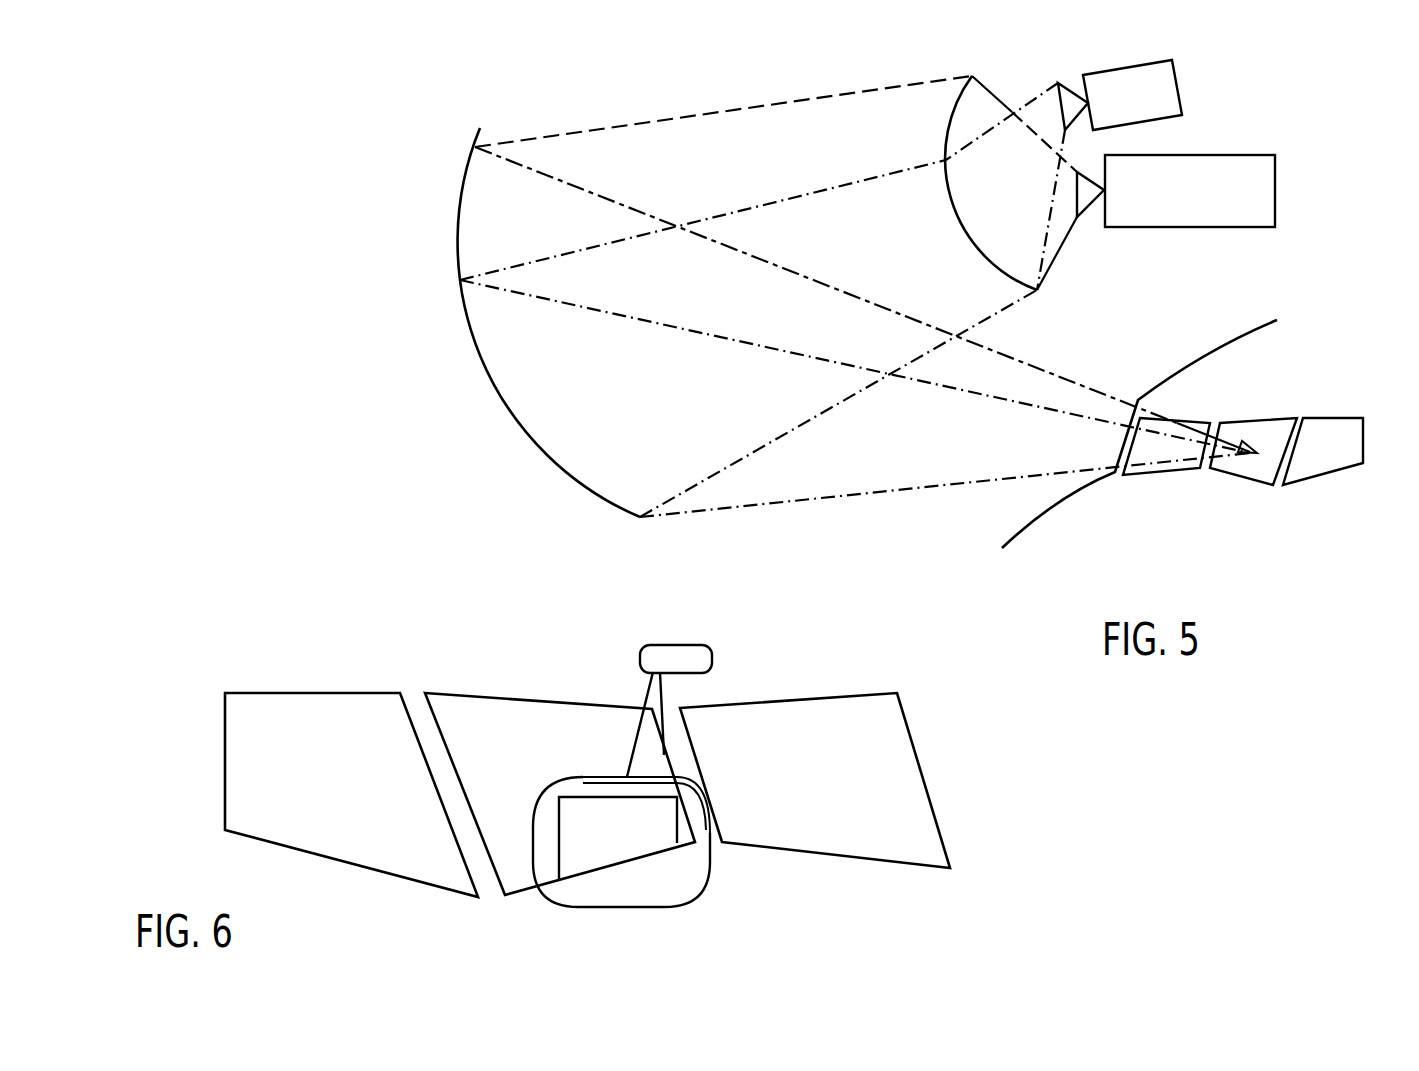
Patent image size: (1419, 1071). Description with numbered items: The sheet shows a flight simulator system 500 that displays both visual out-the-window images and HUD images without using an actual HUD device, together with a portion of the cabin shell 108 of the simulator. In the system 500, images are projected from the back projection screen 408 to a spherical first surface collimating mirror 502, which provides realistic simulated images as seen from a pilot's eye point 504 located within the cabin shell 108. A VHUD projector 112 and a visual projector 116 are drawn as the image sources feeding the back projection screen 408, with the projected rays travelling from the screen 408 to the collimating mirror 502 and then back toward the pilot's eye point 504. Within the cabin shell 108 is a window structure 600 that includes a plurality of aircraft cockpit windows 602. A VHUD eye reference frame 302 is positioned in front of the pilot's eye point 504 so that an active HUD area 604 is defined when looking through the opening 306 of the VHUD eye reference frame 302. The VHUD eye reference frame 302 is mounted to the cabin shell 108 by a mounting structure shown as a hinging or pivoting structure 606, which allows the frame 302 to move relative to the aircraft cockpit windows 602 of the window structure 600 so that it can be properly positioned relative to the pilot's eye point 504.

In FIG. 5, the flight simulator system 500 is at (366, 81).
In FIG. 5, the spherical first surface collimating mirror 502 is at (512, 400).
In FIG. 5, the back projection screen 408 is at (960, 214).
In FIG. 5, the VHUD projector 112 is at (1112, 68).
In FIG. 5, the visual projector 116 is at (1237, 153).
In FIG. 5, the cabin shell 108 is at (1217, 343).
In FIG. 6, the cabin shell 108 is at (537, 674).
In FIG. 5, the pilot's eye point 504 is at (1238, 463).
In FIG. 6, the window structure 600 is at (242, 643).
In FIG. 6, the aircraft cockpit windows 602 is at (277, 729).
In FIG. 6, the hinging or pivoting structure 606 is at (714, 664).
In FIG. 6, the VHUD eye reference frame 302 is at (716, 904).
In FIG. 6, the opening 306 is at (667, 894).
In FIG. 6, the active HUD area 604 is at (583, 852).